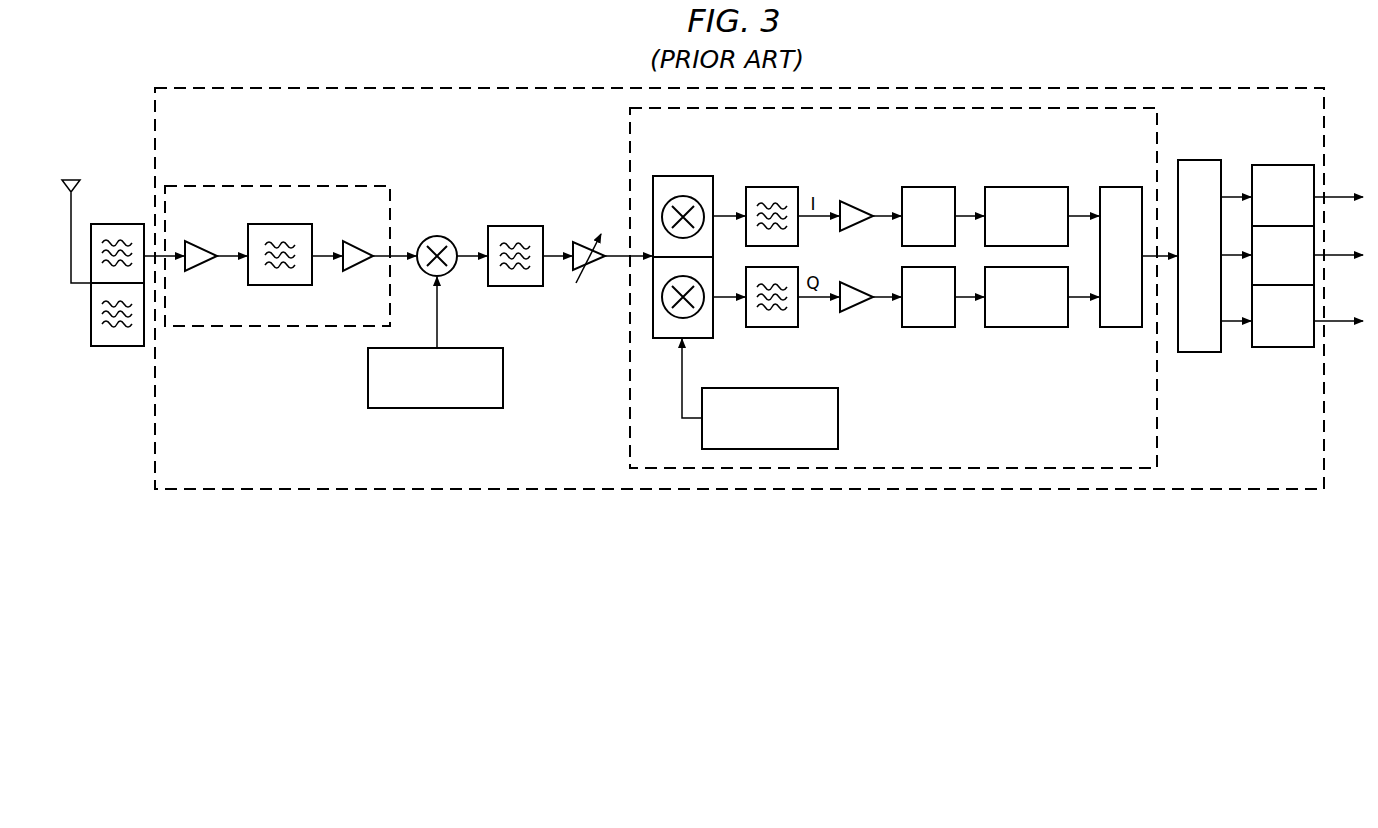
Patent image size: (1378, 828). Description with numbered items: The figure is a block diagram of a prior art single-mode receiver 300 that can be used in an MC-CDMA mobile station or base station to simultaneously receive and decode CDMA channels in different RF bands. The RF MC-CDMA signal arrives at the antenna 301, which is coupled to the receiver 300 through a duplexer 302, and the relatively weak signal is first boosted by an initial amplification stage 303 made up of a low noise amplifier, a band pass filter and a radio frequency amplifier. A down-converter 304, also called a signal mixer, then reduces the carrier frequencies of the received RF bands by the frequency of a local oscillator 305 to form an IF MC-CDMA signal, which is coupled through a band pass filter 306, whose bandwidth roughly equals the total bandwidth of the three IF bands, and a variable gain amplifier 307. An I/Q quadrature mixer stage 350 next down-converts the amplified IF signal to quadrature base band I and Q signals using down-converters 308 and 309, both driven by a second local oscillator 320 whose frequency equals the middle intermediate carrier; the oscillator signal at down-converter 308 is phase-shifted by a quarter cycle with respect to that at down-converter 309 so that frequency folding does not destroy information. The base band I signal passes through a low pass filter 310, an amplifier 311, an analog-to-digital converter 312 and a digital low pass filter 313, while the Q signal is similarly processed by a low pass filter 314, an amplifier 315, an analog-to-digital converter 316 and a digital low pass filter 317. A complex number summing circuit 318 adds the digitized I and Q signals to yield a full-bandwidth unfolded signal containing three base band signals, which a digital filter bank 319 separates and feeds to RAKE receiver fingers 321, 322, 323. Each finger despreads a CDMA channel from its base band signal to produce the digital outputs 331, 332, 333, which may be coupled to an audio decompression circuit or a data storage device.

The receiver 300 is at (155, 147).
The antenna 301 is at (80, 186).
The duplexer 302 is at (115, 348).
The initial amplification stage 303 is at (272, 186).
The down-converter 304 is at (438, 236).
The local oscillator 305 is at (368, 378).
The band pass filter 306 is at (515, 226).
The variable gain amplifier 307 is at (592, 283).
The down-converter 308 is at (686, 176).
The down-converter 309 is at (670, 338).
The low pass filter 310 is at (774, 187).
The amplifier 311 is at (858, 201).
The analog-to-digital converter 312 is at (924, 187).
The digital low pass filter 313 is at (1025, 187).
The low pass filter 314 is at (772, 327).
The amplifier 315 is at (858, 312).
The analog-to-digital converter 316 is at (927, 327).
The digital low pass filter 317 is at (1027, 327).
The complex number summing circuit 318 is at (1120, 187).
The digital filter bank 319 is at (1199, 160).
The local oscillator 320 is at (838, 418).
The RAKE receiver finger 321 is at (1283, 195).
The RAKE receiver finger 322 is at (1283, 255).
The RAKE receiver finger 323 is at (1283, 316).
The output 331 is at (1347, 197).
The output 332 is at (1347, 255).
The output 333 is at (1344, 323).
The I/Q quadrature mixer stage 350 is at (629, 405).